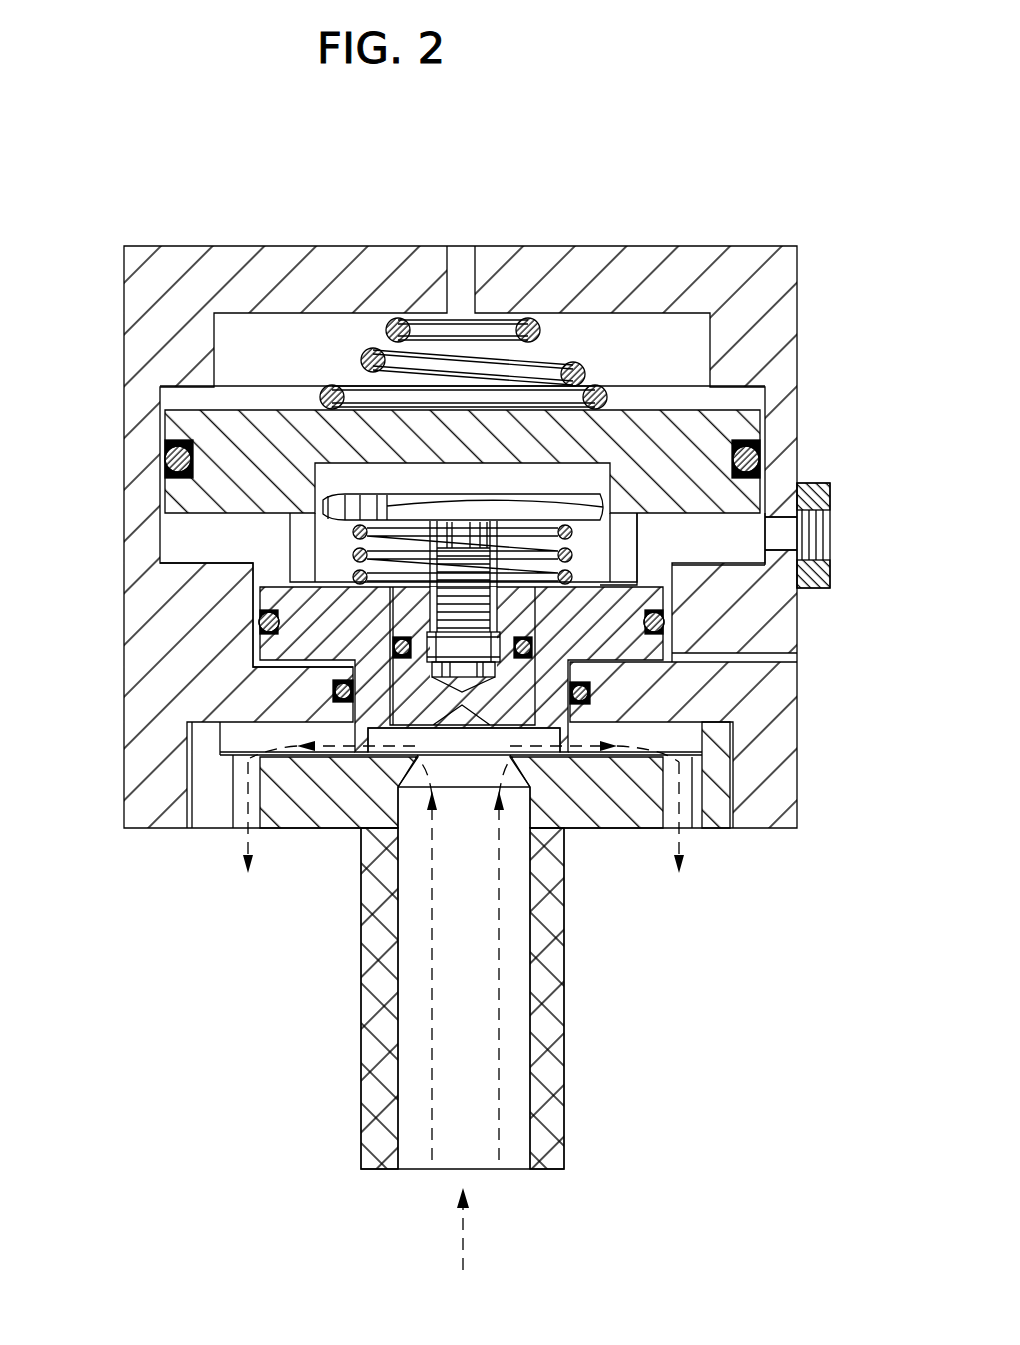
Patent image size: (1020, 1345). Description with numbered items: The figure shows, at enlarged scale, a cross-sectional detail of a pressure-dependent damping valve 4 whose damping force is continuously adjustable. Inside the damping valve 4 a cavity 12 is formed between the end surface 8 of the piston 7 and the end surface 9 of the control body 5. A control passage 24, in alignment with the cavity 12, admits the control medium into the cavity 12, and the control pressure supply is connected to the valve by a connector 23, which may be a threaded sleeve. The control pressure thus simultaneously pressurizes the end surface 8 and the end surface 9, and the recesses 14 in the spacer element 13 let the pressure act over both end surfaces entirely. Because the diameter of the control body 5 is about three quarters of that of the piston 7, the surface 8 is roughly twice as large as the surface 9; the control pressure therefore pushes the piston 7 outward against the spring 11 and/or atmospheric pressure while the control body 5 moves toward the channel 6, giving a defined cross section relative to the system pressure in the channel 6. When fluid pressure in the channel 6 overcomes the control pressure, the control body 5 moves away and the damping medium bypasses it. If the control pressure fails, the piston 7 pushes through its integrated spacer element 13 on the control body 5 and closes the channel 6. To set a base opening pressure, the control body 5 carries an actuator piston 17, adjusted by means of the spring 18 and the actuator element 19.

The damping valve 4 is at (662, 246).
The control body 5 is at (283, 648).
The channel 6 is at (465, 1128).
The piston 7 is at (717, 428).
The end surface of the piston 8 is at (740, 553).
The end surface of the control body 9 is at (648, 584).
The spring 11 is at (529, 319).
The cavity 12 is at (703, 517).
The spacer element 13 is at (302, 523).
The recesses 14 is at (255, 567).
The actuator piston 17 is at (505, 705).
The spring 18 is at (304, 571).
The actuator element 19 is at (323, 497).
The connector 23 is at (833, 521).
The control passage 24 is at (781, 525).